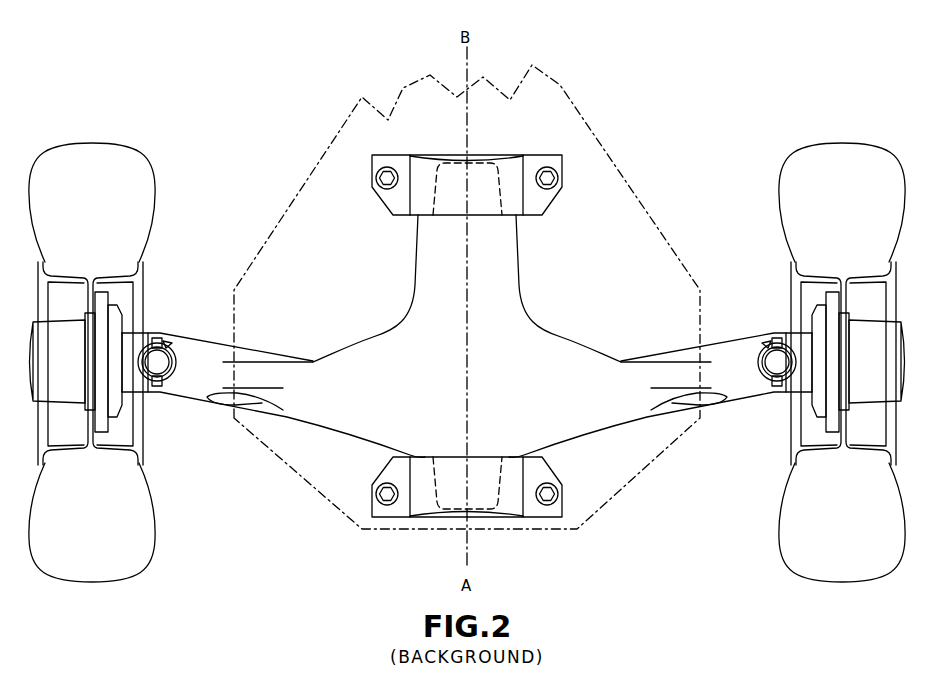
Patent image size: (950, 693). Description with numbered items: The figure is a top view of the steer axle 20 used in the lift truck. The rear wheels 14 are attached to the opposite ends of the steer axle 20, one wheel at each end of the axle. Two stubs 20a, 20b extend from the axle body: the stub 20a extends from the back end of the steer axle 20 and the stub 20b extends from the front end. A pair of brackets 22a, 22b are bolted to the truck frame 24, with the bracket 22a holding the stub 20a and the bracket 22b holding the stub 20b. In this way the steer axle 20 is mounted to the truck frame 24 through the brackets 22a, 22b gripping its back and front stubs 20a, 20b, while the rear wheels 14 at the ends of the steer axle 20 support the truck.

The rear wheels 14 is at (105, 141).
The steer axle 20 is at (594, 418).
The stub 20a is at (453, 477).
The stub 20b is at (487, 203).
The bracket 22a is at (510, 505).
The bracket 22b is at (427, 170).
The truck frame 24 is at (629, 185).